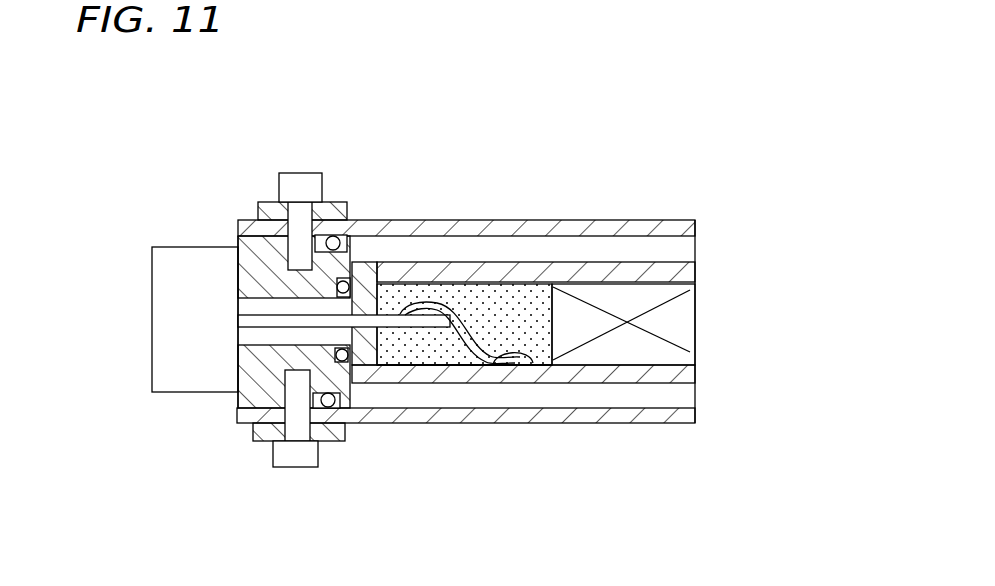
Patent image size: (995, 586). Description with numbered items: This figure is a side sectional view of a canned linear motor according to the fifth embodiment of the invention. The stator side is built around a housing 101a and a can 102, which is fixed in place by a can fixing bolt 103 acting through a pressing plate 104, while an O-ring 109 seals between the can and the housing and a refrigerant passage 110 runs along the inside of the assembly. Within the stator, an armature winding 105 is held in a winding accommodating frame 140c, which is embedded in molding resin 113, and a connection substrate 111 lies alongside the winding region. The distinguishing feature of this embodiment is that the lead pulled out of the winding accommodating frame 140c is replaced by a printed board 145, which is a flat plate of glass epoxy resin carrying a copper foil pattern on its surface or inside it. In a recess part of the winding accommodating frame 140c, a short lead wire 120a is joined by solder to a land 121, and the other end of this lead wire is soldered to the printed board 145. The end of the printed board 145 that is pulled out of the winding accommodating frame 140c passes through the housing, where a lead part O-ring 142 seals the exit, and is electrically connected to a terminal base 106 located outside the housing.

The refrigerant passage 110 is at (521, 247).
The can 102 is at (240, 222).
The housing 101a is at (242, 401).
The winding accommodating frame 140c is at (430, 267).
The connection substrate 111 is at (680, 378).
The molding resin 113 is at (481, 300).
The armature winding 105 is at (673, 317).
The lead part O-ring 142 is at (308, 245).
The pressing plate 104 is at (254, 435).
The can fixing bolt 103 is at (288, 462).
The O-ring 109 is at (353, 427).
The printed board 145 is at (250, 318).
The lead wire 120a is at (462, 340).
The land 121 is at (514, 362).
The terminal base 106 is at (172, 290).